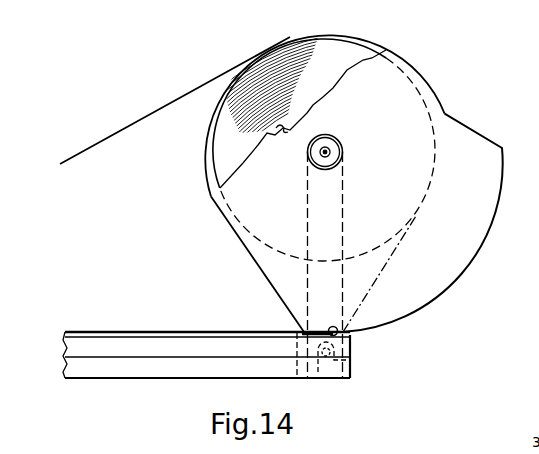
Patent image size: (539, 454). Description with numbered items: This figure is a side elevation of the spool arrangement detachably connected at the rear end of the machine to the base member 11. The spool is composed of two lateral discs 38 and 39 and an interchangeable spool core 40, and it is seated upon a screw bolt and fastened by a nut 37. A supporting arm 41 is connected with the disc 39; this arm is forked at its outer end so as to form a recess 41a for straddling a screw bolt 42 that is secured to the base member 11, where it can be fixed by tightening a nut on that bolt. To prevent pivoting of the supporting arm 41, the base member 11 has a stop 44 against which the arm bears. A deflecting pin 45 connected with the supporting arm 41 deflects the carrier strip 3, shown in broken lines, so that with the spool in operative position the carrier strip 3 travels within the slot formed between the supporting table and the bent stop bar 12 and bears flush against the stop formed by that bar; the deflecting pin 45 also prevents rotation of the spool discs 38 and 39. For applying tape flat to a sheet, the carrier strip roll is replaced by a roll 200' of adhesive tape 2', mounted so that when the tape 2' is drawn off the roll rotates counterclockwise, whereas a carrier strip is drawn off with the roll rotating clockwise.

The roll of adhesive tape 200' is at (324, 135).
The lateral disc 39 is at (254, 54).
The lateral disc 38 is at (478, 238).
The adhesive tape 2' is at (175, 100).
The spool core 40 is at (272, 131).
The nut 37 is at (338, 155).
The supporting arm 41 is at (306, 266).
The carrier strip 3 is at (387, 262).
The deflecting pin 45 is at (340, 333).
The bent stop bar 12 is at (158, 331).
The base member 11 is at (155, 371).
The screw bolt 42 is at (337, 367).
The stop 44 is at (309, 370).
The recess 41a is at (327, 380).